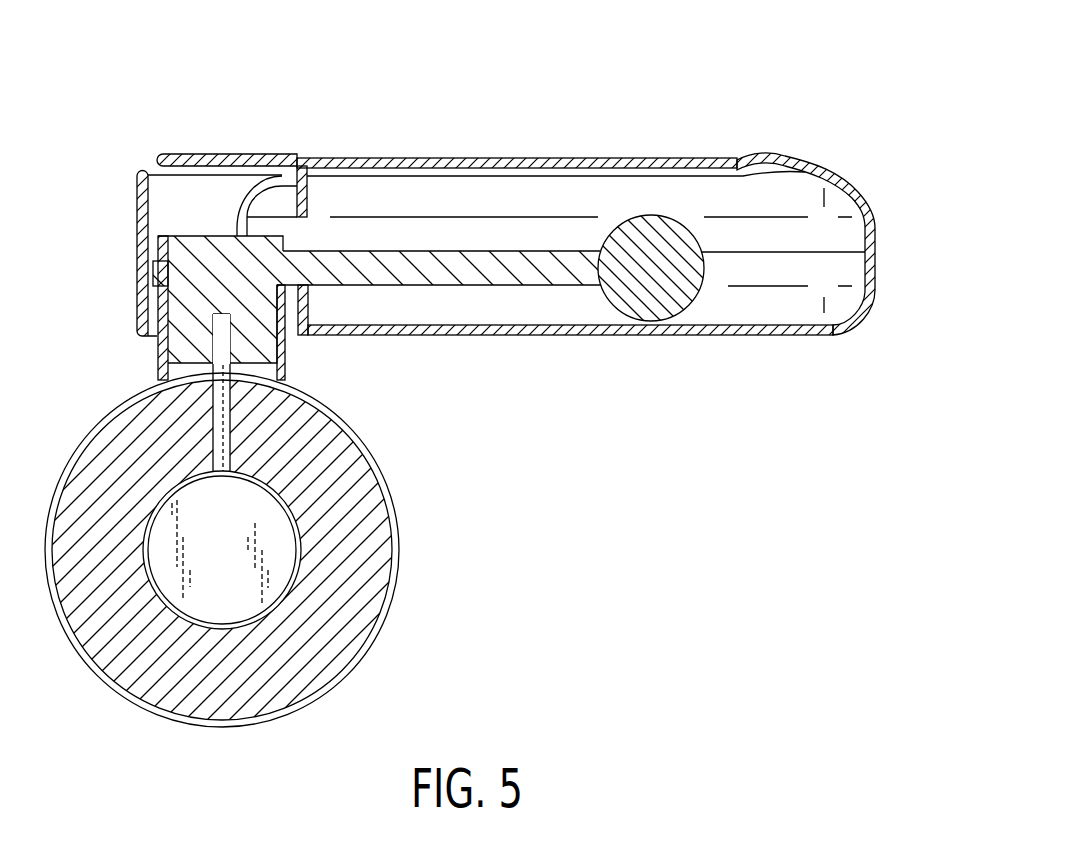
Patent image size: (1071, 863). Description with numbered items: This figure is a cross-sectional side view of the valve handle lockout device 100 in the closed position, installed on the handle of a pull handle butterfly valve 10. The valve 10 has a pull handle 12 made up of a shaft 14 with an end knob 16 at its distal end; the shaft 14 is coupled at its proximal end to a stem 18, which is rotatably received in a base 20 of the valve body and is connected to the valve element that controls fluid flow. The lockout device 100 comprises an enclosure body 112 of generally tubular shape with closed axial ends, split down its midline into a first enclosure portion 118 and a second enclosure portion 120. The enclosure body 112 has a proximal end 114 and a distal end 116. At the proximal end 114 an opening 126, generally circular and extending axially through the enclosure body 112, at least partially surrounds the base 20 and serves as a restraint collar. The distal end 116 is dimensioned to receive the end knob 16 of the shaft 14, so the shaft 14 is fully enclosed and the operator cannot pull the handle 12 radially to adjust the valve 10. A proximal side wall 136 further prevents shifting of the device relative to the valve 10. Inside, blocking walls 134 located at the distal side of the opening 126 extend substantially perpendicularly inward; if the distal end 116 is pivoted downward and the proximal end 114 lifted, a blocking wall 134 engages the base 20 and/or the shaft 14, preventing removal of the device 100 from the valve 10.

The pull handle butterfly valve 10 is at (624, 557).
The pull handle 12 is at (486, 300).
The shaft 14 is at (538, 287).
The end knob 16 is at (677, 296).
The stem 18 is at (262, 337).
The base 20 is at (158, 363).
The valve handle lockout device 100 is at (737, 68).
The enclosure body 112 is at (875, 222).
The proximal end 114 is at (106, 242).
The distal end 116 is at (830, 373).
The first enclosure portion 118 is at (473, 158).
The second enclosure portion 120 is at (607, 337).
The opening 126 is at (153, 337).
The blocking wall 134 is at (307, 190).
The proximal side wall 136 is at (137, 308).